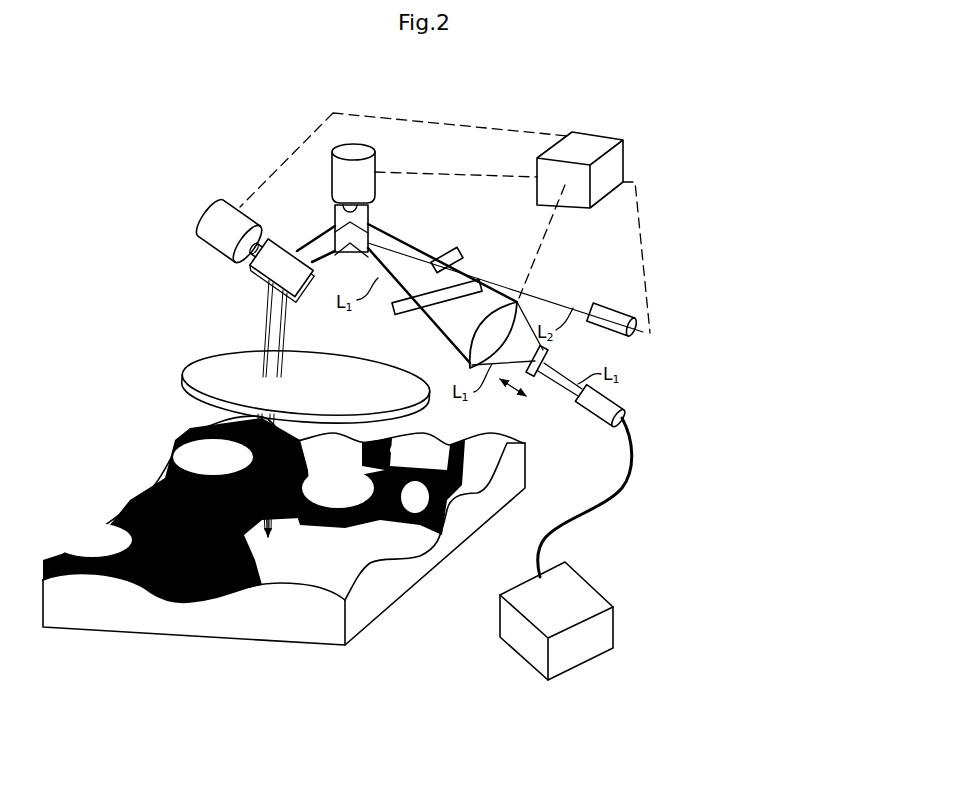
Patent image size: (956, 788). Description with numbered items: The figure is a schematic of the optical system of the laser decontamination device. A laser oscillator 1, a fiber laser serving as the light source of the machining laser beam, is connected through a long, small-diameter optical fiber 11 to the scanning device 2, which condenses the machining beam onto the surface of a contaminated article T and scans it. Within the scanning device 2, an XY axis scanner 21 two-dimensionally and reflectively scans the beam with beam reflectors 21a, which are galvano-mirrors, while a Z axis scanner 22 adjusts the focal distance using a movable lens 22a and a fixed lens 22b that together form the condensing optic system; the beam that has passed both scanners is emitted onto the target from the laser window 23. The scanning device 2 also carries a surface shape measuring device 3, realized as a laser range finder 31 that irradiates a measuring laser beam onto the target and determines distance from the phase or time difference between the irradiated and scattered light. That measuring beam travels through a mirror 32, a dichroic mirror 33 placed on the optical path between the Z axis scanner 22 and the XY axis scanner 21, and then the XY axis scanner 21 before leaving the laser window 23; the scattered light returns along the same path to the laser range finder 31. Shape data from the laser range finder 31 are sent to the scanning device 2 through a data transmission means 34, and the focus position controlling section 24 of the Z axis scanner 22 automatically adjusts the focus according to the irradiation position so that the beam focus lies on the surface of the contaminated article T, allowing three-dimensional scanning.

The laser oscillator 1 is at (580, 649).
The optical fiber 11 is at (580, 515).
The scanning device 2 is at (346, 352).
The XY axis scanner 21 is at (381, 201).
The beam reflector 21a is at (377, 183).
The Z axis scanner 22 is at (554, 355).
The movable lens 22a is at (533, 378).
The fixed lens 22b is at (468, 360).
The laser window 23 is at (214, 360).
The focus position controlling section 24 is at (571, 143).
The surface shape measuring device 3 is at (605, 294).
The laser range finder 31 is at (600, 303).
The mirror 32 is at (461, 248).
The dichroic mirror 33 is at (398, 312).
The data transmission means 34 is at (634, 208).
The contaminated article T is at (358, 604).